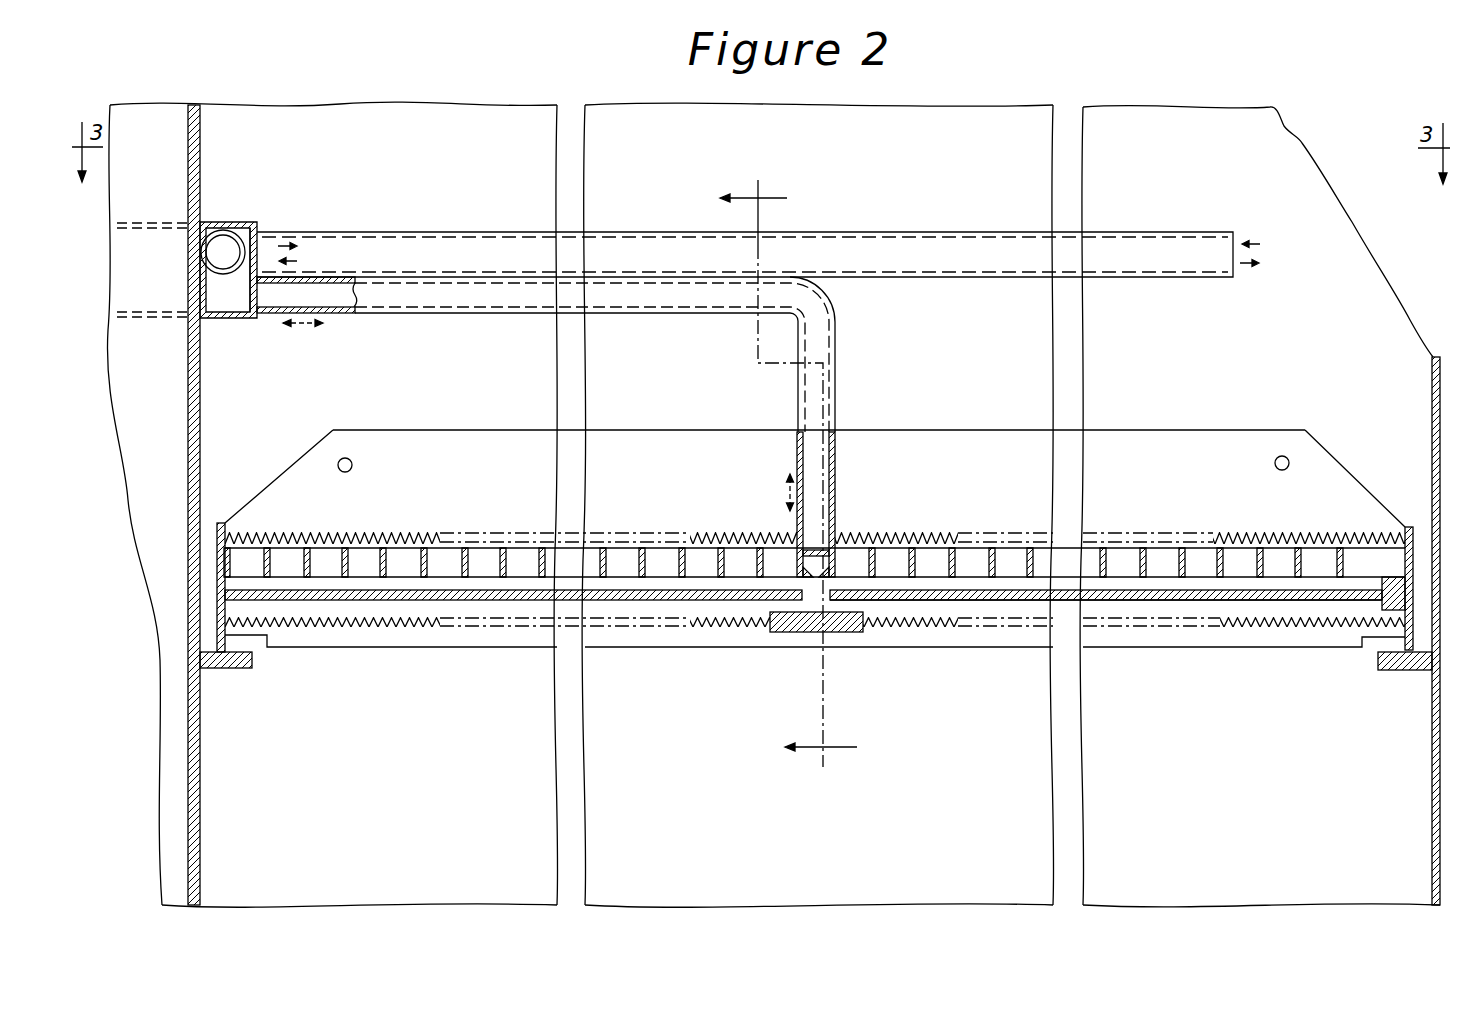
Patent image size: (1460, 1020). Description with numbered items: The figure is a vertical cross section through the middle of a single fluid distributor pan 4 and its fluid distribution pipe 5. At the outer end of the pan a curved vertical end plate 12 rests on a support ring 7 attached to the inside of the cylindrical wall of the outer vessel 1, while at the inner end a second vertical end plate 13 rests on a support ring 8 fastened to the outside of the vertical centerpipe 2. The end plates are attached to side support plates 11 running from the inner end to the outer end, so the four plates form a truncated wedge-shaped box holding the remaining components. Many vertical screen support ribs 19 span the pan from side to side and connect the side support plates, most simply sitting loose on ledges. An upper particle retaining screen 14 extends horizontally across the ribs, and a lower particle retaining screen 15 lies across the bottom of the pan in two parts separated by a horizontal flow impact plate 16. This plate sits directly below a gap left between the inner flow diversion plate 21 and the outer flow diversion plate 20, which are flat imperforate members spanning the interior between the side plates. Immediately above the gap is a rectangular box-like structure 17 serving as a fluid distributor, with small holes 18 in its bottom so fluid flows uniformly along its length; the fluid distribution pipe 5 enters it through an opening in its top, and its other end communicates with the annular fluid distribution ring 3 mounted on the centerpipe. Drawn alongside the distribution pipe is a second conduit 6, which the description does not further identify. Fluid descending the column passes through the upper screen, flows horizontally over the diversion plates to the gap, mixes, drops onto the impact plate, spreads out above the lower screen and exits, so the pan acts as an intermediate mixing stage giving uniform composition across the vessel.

The outer vessel 1 is at (1431, 406).
The vertical centerpipe 2 is at (197, 447).
The annular fluid distribution ring 3 is at (223, 318).
The fluid distributor pan 4 is at (963, 431).
The fluid distribution pipe 5 is at (505, 313).
The pipe 6 is at (238, 270).
The support ring 7 is at (1415, 672).
The support ring 8 is at (168, 663).
The side support plates 11 is at (495, 430).
The curved vertical end plate 12 is at (1413, 560).
The second vertical end plate 13 is at (212, 570).
The upper particle retaining screen 14 is at (355, 535).
The lower particle retaining screen 15 is at (470, 627).
The flow impact plate 16 is at (803, 632).
The rectangular box-like structure 17 is at (808, 552).
The holes 18 is at (825, 575).
The vertical screen support ribs 19 is at (503, 565).
The outer flow diversion plate 20 is at (1037, 600).
The inner flow diversion plate 21 is at (470, 600).